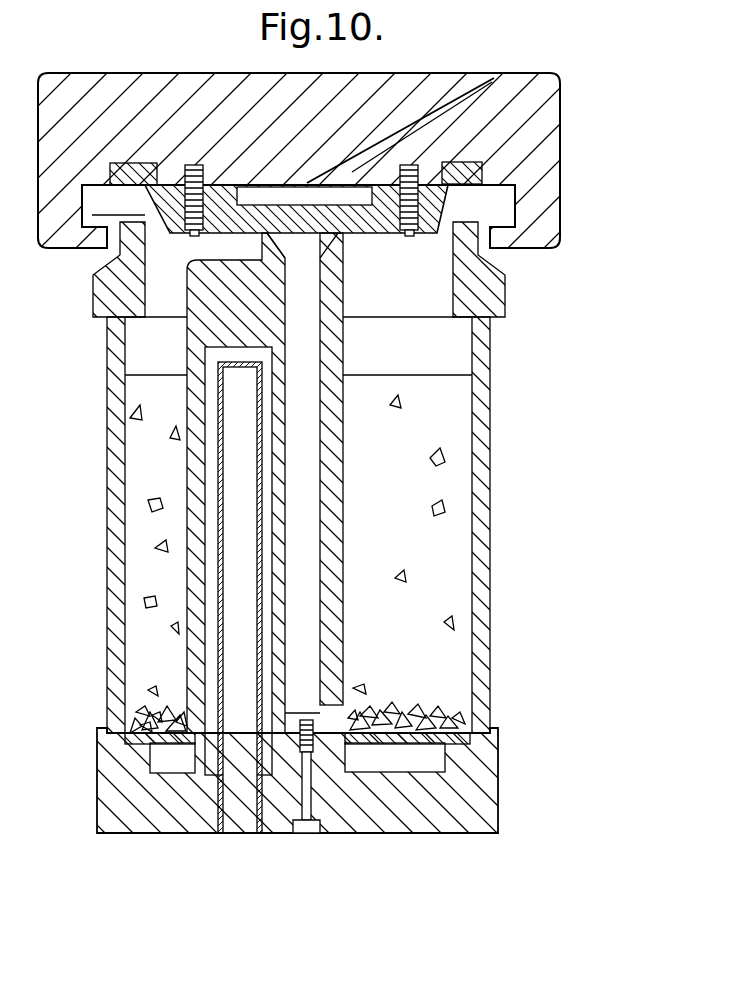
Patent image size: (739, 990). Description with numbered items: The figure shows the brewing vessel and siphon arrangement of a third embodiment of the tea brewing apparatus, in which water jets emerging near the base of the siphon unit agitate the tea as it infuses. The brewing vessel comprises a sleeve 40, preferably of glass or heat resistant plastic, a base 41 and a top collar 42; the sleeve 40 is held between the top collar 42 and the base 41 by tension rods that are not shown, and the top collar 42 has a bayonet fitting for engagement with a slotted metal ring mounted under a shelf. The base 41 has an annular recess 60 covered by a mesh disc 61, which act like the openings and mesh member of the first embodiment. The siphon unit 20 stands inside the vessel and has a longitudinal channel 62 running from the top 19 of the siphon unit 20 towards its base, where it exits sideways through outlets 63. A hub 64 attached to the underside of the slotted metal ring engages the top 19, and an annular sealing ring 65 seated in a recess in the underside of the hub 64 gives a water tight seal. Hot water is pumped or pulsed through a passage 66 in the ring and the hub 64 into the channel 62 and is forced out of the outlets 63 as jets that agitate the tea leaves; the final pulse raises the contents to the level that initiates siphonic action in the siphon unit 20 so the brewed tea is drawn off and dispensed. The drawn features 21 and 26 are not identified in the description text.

The top of the siphon unit 19 is at (247, 238).
The siphon unit 20 is at (163, 577).
The inner tube 21 is at (223, 484).
The inner wall 26 is at (200, 645).
The sleeve 40 is at (480, 407).
The base 41 is at (472, 753).
The top collar 42 is at (530, 130).
The annular recess 60 is at (162, 765).
The mesh disc 61 is at (187, 737).
The longitudinal channel 62 is at (307, 512).
The outlets 63 is at (330, 705).
The hub 64 is at (452, 206).
The annular sealing ring 65 is at (343, 233).
The passage 66 is at (500, 78).